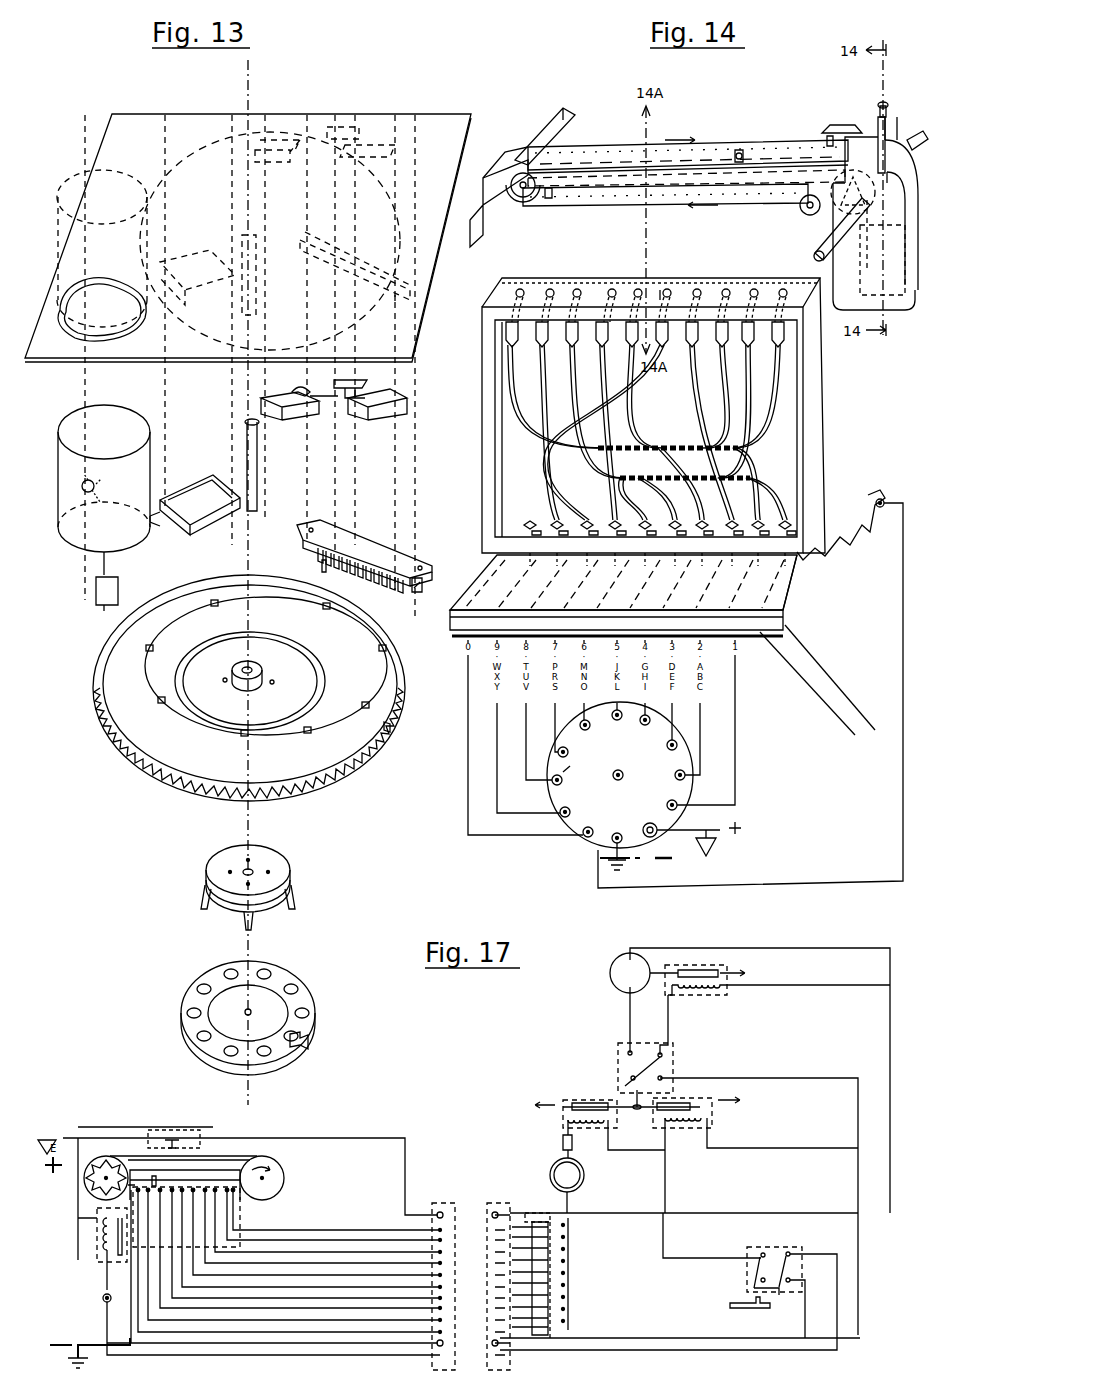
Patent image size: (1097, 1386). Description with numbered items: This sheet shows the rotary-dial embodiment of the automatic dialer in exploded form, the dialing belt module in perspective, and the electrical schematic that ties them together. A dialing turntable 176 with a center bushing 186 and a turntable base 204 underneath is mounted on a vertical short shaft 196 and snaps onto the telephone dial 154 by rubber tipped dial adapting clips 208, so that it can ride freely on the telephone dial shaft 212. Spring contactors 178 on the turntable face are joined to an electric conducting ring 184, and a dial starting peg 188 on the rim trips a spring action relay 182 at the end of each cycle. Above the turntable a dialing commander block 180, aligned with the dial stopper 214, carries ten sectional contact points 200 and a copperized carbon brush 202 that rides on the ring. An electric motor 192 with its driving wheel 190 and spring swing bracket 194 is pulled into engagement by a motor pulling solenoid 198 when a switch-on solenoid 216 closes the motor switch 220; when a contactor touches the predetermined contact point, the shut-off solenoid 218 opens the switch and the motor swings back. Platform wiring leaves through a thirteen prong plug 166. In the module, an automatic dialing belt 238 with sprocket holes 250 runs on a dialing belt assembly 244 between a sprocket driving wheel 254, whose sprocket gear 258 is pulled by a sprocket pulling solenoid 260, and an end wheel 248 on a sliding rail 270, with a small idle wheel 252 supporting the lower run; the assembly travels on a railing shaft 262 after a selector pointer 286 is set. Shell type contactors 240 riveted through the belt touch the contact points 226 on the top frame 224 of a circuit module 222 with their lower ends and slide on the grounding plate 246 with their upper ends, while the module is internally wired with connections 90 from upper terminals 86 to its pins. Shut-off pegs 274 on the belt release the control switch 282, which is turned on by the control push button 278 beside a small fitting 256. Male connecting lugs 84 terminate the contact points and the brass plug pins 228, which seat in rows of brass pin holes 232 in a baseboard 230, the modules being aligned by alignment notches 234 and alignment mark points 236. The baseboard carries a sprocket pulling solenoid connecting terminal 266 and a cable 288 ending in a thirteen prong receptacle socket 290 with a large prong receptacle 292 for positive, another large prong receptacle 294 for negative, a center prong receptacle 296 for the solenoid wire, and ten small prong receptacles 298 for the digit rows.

In FIG. 14, the male connecting lug 84 is at (527, 527).
In FIG. 14, the terminals 86 is at (506, 343).
In FIG. 14, the wires 90 is at (800, 393).
In FIG. 13, the telephone dial 154 is at (208, 982).
In FIG. 17, the thirteen prong plug 166 is at (446, 1203).
In FIG. 13, the dialing turntable 176 is at (206, 768).
In FIG. 13, the spring contactor 178 is at (150, 703).
In FIG. 17, the spring contactor 178 is at (570, 1290).
In FIG. 13, the dialing commander block 180 is at (352, 541).
In FIG. 17, the dialing commander block 180 is at (535, 1212).
In FIG. 13, the spring action relay 182 is at (424, 585).
In FIG. 17, the spring action relay 182 is at (775, 1253).
In FIG. 13, the electric conducting ring 184 is at (325, 688).
In FIG. 17, the electric conducting ring 184 is at (585, 1175).
In FIG. 13, the bushing 186 is at (260, 666).
In FIG. 13, the dial starting peg 188 is at (384, 730).
In FIG. 17, the dial starting peg 188 is at (755, 1300).
In FIG. 13, the driving wheel 190 is at (103, 592).
In FIG. 13, the electric motor 192 is at (110, 413).
In FIG. 17, the electric motor 192 is at (612, 980).
In FIG. 13, the spring swing bracket 194 is at (98, 486).
In FIG. 13, the vertical short shaft 196 is at (246, 462).
In FIG. 13, the motor pulling solenoid 198 is at (178, 522).
In FIG. 17, the motor pulling solenoid 198 is at (705, 970).
In FIG. 13, the sectional contact points 200 is at (372, 586).
In FIG. 17, the sectional contact points 200 is at (548, 1248).
In FIG. 13, the copperized carbon brush 202 is at (320, 568).
In FIG. 17, the copperized carbon brush 202 is at (563, 1143).
In FIG. 13, the turntable base 204 is at (268, 858).
In FIG. 13, the rubber tipped dial adapting clips 208 is at (298, 893).
In FIG. 13, the telephone dial shaft 212 is at (252, 1012).
In FIG. 13, the dial stopper 214 is at (310, 1040).
In FIG. 13, the switch-on solenoid 216 is at (360, 410).
In FIG. 17, the switch-on solenoid 216 is at (712, 1118).
In FIG. 13, the shut-off solenoid 218 is at (262, 402).
In FIG. 17, the shut-off solenoid 218 is at (568, 1120).
In FIG. 13, the motor switch 220 is at (345, 380).
In FIG. 17, the motor switch 220 is at (668, 1062).
In FIG. 14, the circuit module 222 is at (490, 440).
In FIG. 17, the circuit module 222 is at (240, 1215).
In FIG. 14, the top frame 224 is at (567, 288).
In FIG. 14, the contact points 226 is at (660, 290).
In FIG. 14, the brass plug pins 228 is at (795, 565).
In FIG. 14, the baseboard 230 is at (748, 640).
In FIG. 14, the brass pin holes 232 is at (770, 620).
In FIG. 14, the alignment notch 234 is at (830, 500).
In FIG. 14, the alignment mark points 236 is at (798, 585).
In FIG. 14, the dialing belt 238 is at (712, 145).
In FIG. 17, the dialing belt 238 is at (245, 1160).
In FIG. 14, the shell type contactor 240 is at (739, 148).
In FIG. 17, the shell type contactor 240 is at (150, 1178).
In FIG. 14, the dialing belt assembly 244 is at (833, 262).
In FIG. 14, the grounding plate 246 is at (594, 165).
In FIG. 17, the grounding plate 246 is at (215, 1170).
In FIG. 14, the end wheel 248 is at (526, 198).
In FIG. 17, the end wheel 248 is at (284, 1177).
In FIG. 14, the sprocket holes 250 is at (632, 202).
In FIG. 14, the small idle wheel 252 is at (799, 207).
In FIG. 14, the sprocket driving wheel 254 is at (862, 285).
In FIG. 14, the lug 256 is at (907, 140).
In FIG. 14, the sprocket gear 258 is at (867, 222).
In FIG. 17, the sprocket gear 258 is at (95, 1168).
In FIG. 14, the sprocket pulling solenoid 260 is at (895, 272).
In FIG. 17, the sprocket pulling solenoid 260 is at (104, 1245).
In FIG. 14, the railing shaft 262 is at (818, 240).
In FIG. 14, the sprocket pulling solenoid connecting terminal 266 is at (882, 498).
In FIG. 17, the sprocket pulling solenoid connecting terminal 266 is at (103, 1299).
In FIG. 14, the sliding rail 270 is at (492, 217).
In FIG. 14, the shut-off peg 274 is at (826, 138).
In FIG. 17, the shut-off peg 274 is at (172, 1138).
In FIG. 14, the control push button 278 is at (886, 104).
In FIG. 14, the control switch 282 is at (876, 122).
In FIG. 17, the control switch 282 is at (180, 1130).
In FIG. 14, the selector pointer 286 is at (836, 126).
In FIG. 14, the cable 288 is at (790, 640).
In FIG. 14, the thirteen prong receptacle socket 290 is at (690, 786).
In FIG. 17, the thirteen prong receptacle socket 290 is at (495, 1203).
In FIG. 14, the large prong receptacle 292 is at (662, 842).
In FIG. 14, the large prong receptacle 294 is at (645, 826).
In FIG. 14, the center prong receptacle 296 is at (620, 770).
In FIG. 14, the small prong receptacle 298 is at (570, 766).